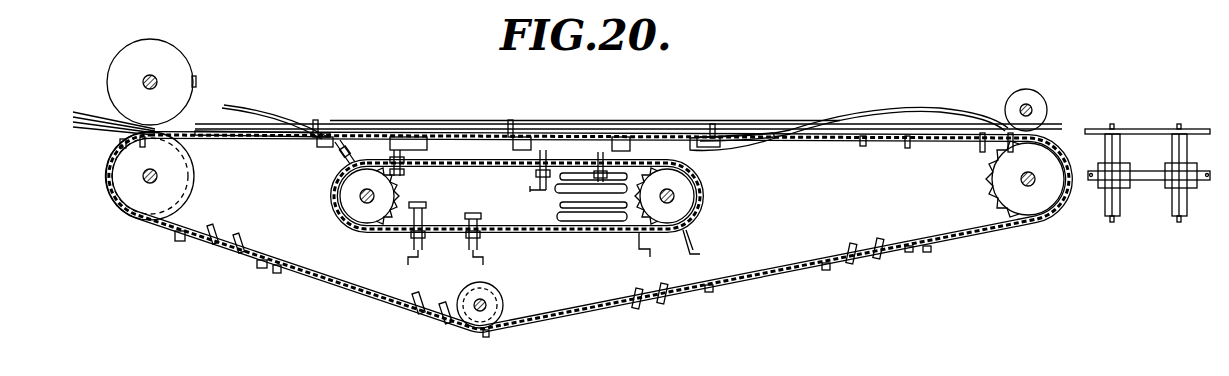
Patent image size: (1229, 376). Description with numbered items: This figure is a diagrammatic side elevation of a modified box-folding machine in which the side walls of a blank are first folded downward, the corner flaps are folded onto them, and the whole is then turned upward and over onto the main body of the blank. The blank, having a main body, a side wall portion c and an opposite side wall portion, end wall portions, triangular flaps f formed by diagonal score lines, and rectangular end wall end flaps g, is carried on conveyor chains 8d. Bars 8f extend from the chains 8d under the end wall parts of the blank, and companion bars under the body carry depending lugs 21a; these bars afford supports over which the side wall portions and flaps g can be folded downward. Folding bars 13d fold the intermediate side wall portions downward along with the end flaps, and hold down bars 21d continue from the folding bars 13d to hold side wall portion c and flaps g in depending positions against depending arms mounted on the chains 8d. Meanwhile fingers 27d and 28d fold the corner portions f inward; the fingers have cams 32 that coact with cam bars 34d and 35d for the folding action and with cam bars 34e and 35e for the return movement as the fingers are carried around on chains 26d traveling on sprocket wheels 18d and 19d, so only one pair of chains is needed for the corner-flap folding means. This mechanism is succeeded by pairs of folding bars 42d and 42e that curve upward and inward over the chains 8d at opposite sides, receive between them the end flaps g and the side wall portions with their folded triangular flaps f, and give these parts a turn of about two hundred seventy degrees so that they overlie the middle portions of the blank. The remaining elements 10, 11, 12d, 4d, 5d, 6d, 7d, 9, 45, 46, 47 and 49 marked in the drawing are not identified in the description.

The feed roller 10 is at (152, 50).
The sheets being fed 11 is at (98, 129).
The curved guide plate 12d is at (242, 106).
The folding bars 13d is at (238, 142).
The sprocket wheel 4d is at (162, 178).
The sprocket wheel 5d is at (1028, 188).
The sprocket rim 6d is at (182, 192).
The sprocket teeth 7d is at (992, 184).
The conveyor chains 8d is at (214, 142).
The bars 8f is at (126, 150).
The chain pin 9 is at (302, 122).
The end wall end flaps g is at (322, 126).
The side wall portion c is at (392, 130).
The triangular flap portions f is at (330, 162).
The hold down bars 21d is at (368, 120).
The depending lugs 21a is at (150, 140).
The fingers 27d is at (312, 142).
The fingers 28d is at (602, 132).
The sprocket wheels 18d is at (332, 210).
The sprocket wheels 19d is at (706, 200).
The chains 26d is at (524, 234).
The cams 32 is at (434, 196).
The cam bar 34d is at (632, 160).
The cam bar 34e is at (612, 218).
The cam bar 35d is at (645, 204).
The cam bar 35e is at (578, 206).
The folding bars 42d is at (702, 140).
The folding bars 42e is at (690, 118).
The roller 45 is at (1011, 87).
The cross bar 46 is at (1124, 128).
The sprocket wheel 47 is at (1105, 214).
The pin 49 is at (1112, 124).